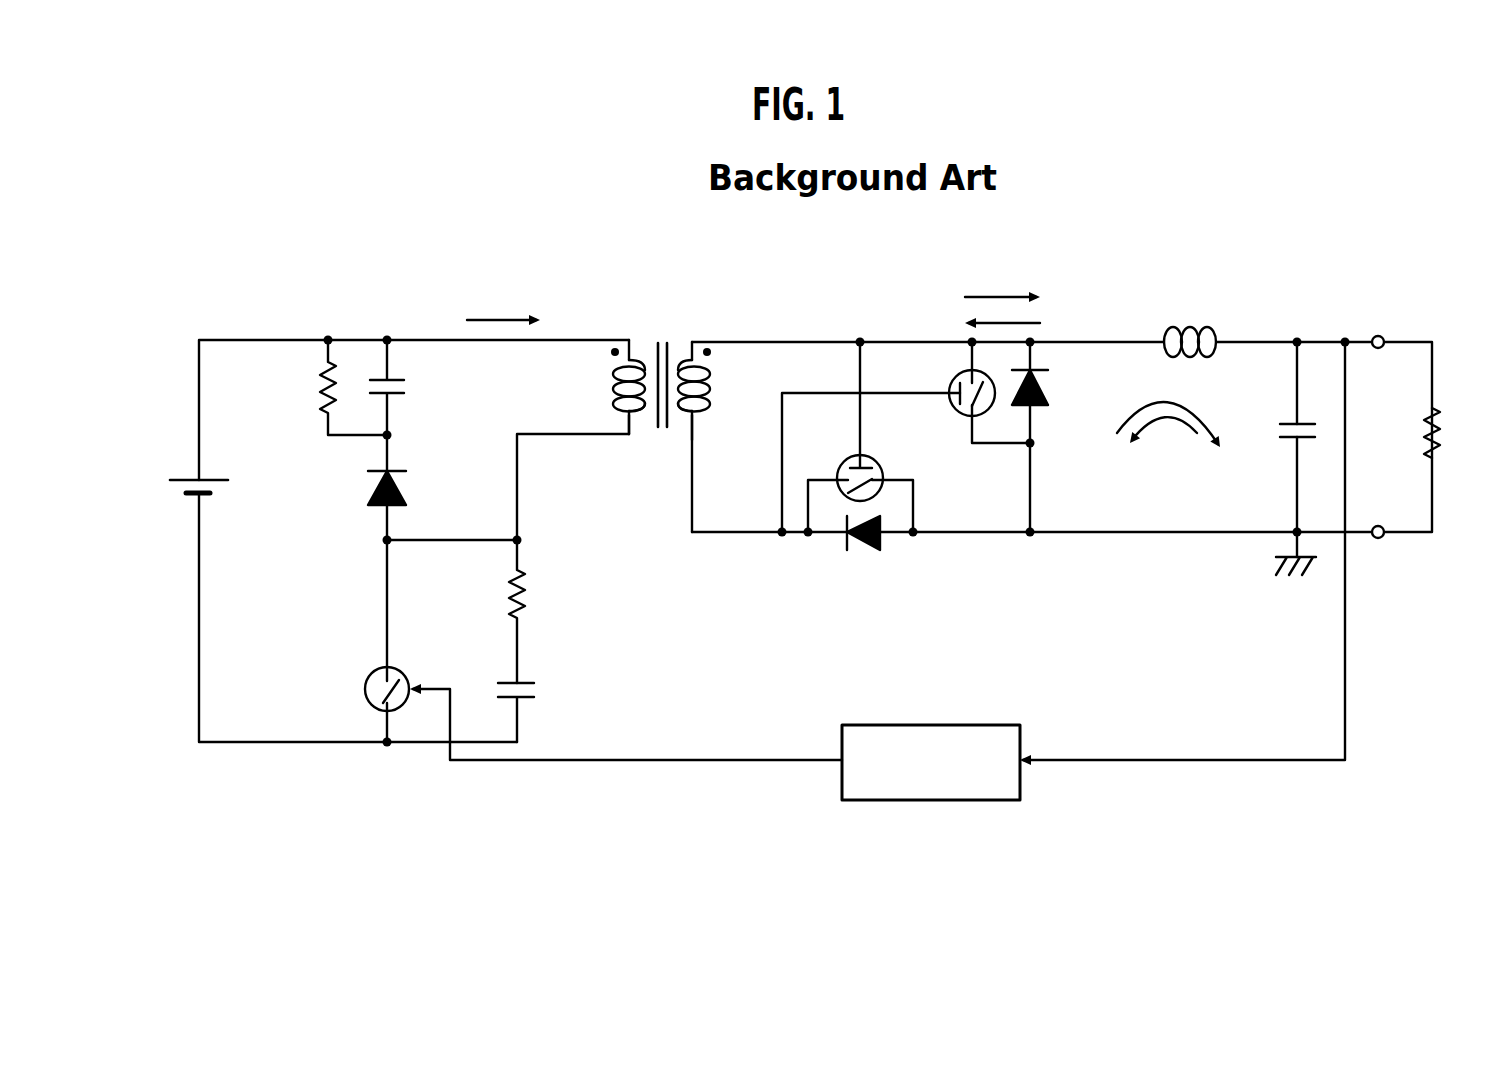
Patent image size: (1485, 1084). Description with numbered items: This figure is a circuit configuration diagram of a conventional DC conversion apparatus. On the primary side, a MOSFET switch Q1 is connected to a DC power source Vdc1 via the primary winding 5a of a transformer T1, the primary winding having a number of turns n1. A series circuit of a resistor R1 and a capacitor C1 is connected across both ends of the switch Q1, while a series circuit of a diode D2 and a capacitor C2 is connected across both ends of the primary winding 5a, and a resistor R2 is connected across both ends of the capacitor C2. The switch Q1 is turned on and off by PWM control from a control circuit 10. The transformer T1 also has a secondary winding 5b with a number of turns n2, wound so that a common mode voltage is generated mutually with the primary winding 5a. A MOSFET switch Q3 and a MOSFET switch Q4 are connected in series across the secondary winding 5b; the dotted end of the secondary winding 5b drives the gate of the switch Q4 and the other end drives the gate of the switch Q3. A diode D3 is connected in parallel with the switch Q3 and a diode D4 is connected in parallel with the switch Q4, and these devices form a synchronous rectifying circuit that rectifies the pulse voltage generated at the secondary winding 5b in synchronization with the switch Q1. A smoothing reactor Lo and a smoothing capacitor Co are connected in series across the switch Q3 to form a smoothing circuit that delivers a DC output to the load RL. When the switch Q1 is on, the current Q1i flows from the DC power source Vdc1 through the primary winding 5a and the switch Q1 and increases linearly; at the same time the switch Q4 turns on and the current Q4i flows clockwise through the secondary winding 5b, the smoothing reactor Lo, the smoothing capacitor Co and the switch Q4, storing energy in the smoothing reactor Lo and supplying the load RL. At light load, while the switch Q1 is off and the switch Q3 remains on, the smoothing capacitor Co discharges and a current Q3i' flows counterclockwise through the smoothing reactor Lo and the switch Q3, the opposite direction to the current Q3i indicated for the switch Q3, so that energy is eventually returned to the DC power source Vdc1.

The DC power source Vdc1 is at (170, 486).
The resistor R2 is at (337, 387).
The capacitor C2 is at (403, 387).
The diode D2 is at (402, 487).
The MOSFET switch Q1 is at (370, 641).
The resistor R1 is at (500, 611).
The capacitor C1 is at (533, 709).
The current Q1i is at (503, 304).
The transformer T1 is at (662, 366).
The number of turns of primary winding n1 is at (617, 386).
The number of turns of secondary winding n2 is at (710, 386).
The primary winding 5a is at (617, 418).
The secondary winding 5b is at (712, 413).
The MOSFET switch Q3 is at (964, 408).
The MOSFET switch Q4 is at (845, 471).
The diode D3 is at (1047, 388).
The diode D4 is at (863, 551).
The current Q4i is at (1023, 308).
The smoothing reactor Lo is at (1190, 359).
The current Q3i is at (1181, 444).
The current Q3i' is at (1153, 451).
The smoothing capacitor Co is at (1280, 431).
The load RL is at (1448, 433).
The control circuit 10 is at (937, 725).